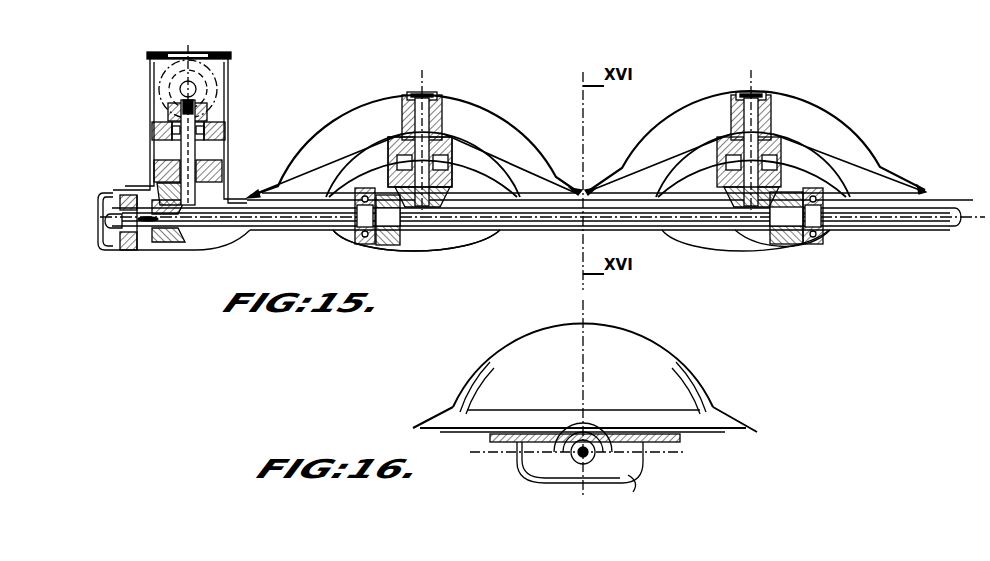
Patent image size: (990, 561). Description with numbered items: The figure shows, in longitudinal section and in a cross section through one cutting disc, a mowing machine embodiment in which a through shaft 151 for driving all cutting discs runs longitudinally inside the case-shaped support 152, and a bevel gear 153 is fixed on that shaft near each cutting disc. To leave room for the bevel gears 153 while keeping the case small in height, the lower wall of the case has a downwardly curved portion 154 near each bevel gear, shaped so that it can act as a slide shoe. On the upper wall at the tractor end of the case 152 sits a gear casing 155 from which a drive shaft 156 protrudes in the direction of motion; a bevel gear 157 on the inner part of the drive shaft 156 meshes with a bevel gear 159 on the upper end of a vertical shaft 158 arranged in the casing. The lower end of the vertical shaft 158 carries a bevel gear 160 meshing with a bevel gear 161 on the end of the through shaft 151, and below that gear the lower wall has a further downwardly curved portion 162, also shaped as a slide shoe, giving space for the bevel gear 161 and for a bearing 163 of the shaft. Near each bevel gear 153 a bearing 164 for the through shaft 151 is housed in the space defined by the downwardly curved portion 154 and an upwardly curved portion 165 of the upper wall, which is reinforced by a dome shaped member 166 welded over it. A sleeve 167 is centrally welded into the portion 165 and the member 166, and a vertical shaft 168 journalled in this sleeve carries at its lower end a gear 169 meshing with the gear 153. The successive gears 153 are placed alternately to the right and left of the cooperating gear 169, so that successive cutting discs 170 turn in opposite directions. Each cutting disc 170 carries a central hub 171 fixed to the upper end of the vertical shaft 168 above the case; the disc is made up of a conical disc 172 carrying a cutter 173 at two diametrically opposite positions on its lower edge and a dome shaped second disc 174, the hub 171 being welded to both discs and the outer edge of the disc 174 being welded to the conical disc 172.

In FIG. 15, the through shaft 151 is at (289, 227).
In FIG. 16, the through shaft 151 is at (577, 457).
In FIG. 15, the case-shaped support 152 is at (544, 230).
In FIG. 16, the case-shaped support 152 is at (513, 455).
In FIG. 15, the bevel gear 153 is at (393, 243).
In FIG. 15, the downwardly curved portion 154 is at (427, 241).
In FIG. 16, the downwardly curved portion 154 is at (640, 474).
In FIG. 15, the gear casing 155 is at (227, 93).
In FIG. 15, the drive shaft 156 is at (160, 53).
In FIG. 15, the bevel gear 157 is at (167, 83).
In FIG. 15, the vertical shaft 158 is at (167, 153).
In FIG. 15, the bevel gear 159 is at (167, 108).
In FIG. 15, the bevel gear 160 is at (229, 195).
In FIG. 15, the bevel gear 161 is at (157, 243).
In FIG. 15, the downwardly curved portion 162 is at (107, 243).
In FIG. 15, the bearing 163 is at (117, 245).
In FIG. 15, the bearing 164 is at (360, 245).
In FIG. 15, the upwardly curved portion 165 is at (501, 226).
In FIG. 15, the dome shaped member 166 is at (513, 173).
In FIG. 15, the sleeve 167 is at (497, 137).
In FIG. 15, the vertical shaft 168 is at (453, 123).
In FIG. 15, the gear 169 is at (440, 190).
In FIG. 15, the cutting disc 170 is at (587, 123).
In FIG. 16, the cutting disc 170 is at (658, 331).
In FIG. 15, the hub 171 is at (438, 94).
In FIG. 15, the conical disc 172 is at (340, 149).
In FIG. 15, the cutter 173 is at (250, 196).
In FIG. 16, the cutter 173 is at (757, 428).
In FIG. 15, the dome shaped second disc 174 is at (377, 93).